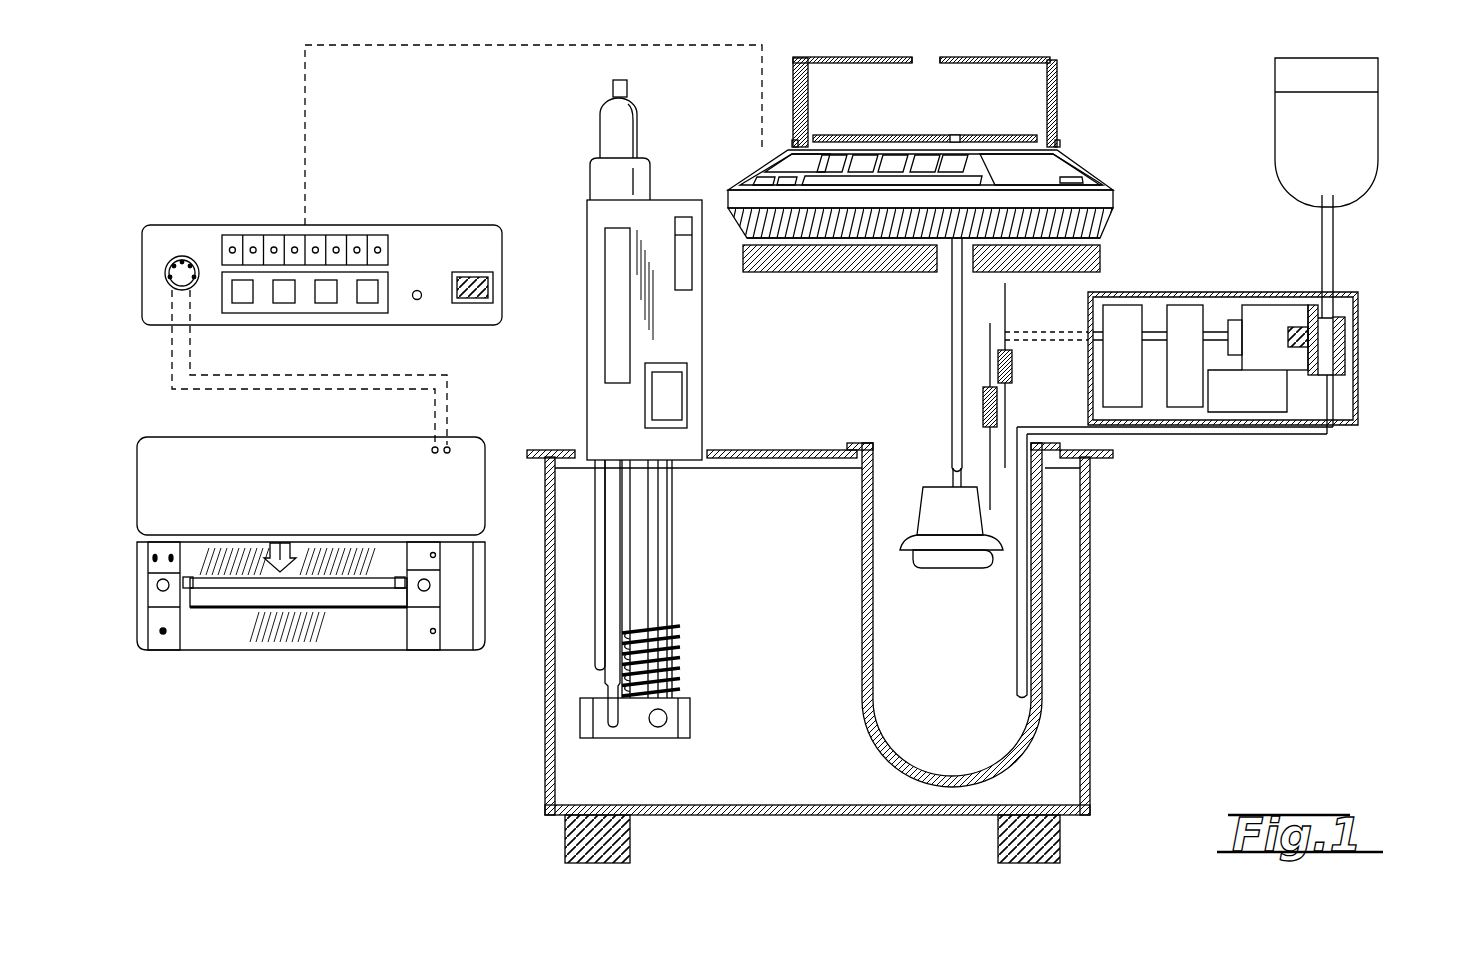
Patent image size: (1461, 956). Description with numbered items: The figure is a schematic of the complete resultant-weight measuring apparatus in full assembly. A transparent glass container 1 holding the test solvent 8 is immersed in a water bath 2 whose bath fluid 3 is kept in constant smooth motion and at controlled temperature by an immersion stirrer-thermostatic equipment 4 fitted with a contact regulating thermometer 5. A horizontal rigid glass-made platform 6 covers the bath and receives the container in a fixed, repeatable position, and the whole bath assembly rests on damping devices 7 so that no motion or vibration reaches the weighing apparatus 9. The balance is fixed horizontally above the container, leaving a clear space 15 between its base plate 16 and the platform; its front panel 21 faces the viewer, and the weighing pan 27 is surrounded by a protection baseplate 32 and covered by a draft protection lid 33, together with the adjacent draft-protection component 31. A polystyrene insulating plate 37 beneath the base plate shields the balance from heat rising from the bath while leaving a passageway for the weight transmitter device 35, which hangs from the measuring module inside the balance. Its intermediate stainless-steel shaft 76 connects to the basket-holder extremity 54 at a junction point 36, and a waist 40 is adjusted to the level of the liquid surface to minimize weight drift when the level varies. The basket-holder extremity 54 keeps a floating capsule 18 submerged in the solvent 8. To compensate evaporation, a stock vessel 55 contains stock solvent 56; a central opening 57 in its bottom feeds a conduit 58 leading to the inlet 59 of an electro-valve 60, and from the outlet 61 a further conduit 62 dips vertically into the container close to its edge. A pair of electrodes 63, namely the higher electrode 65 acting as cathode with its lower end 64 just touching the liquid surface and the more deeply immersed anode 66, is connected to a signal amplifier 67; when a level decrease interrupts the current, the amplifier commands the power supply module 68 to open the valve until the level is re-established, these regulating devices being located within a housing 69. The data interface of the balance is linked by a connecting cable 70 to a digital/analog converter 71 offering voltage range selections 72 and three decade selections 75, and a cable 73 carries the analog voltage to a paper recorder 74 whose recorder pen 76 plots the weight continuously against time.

The container 1 is at (860, 663).
The water bath 2 is at (1090, 735).
The bath fluid 3 is at (817, 623).
The immersion stirrer-thermostatic equipment 4 is at (587, 425).
The contact regulating thermometer 5 is at (608, 655).
The horizontal rigid glass-made platform 6 is at (768, 450).
The damping devices 7 is at (565, 845).
The solvent 8 is at (929, 691).
The weighing apparatus 9 is at (1115, 183).
The space 15 is at (795, 372).
The base plate 16 is at (753, 223).
The floating capsule 18 is at (942, 568).
The front panel 21 is at (787, 163).
The weighing pan 27 is at (867, 137).
The hood 31 is at (1052, 108).
The protection baseplate 32 is at (1055, 142).
The draft protection lid 33 is at (1012, 65).
The weight transmitter device 35 is at (948, 287).
The junction point 36 is at (948, 310).
The polystyrene insulating plate 37 is at (785, 270).
The waist 40 is at (948, 470).
The basket-holder extremity 54 is at (932, 515).
The stock vessel 55 is at (1273, 127).
The stock solvent 56 is at (1326, 117).
The central opening 57 is at (1320, 213).
The conduit 58 is at (1337, 233).
The inlet 59 is at (1335, 297).
The electro-valve 60 is at (1358, 337).
The outlet 61 is at (1343, 425).
The conduit 62 is at (1170, 435).
The pair of electrodes 63 is at (1005, 308).
The lower end 64 is at (1020, 485).
The higher electrode 65 is at (1005, 403).
The anode 66 is at (990, 450).
The signal amplifier 67 is at (1163, 270).
The power supply module 68 is at (1237, 270).
The housing 69 is at (1308, 273).
The connecting cable 70 is at (397, 46).
The digital/analog converter 71 is at (467, 193).
The voltage range selections 72 is at (182, 257).
The cable 73 is at (440, 387).
The paper recorder 74 is at (230, 455).
The decade selections 75 is at (358, 240).
The stainless-steel shaft 76 is at (287, 560).